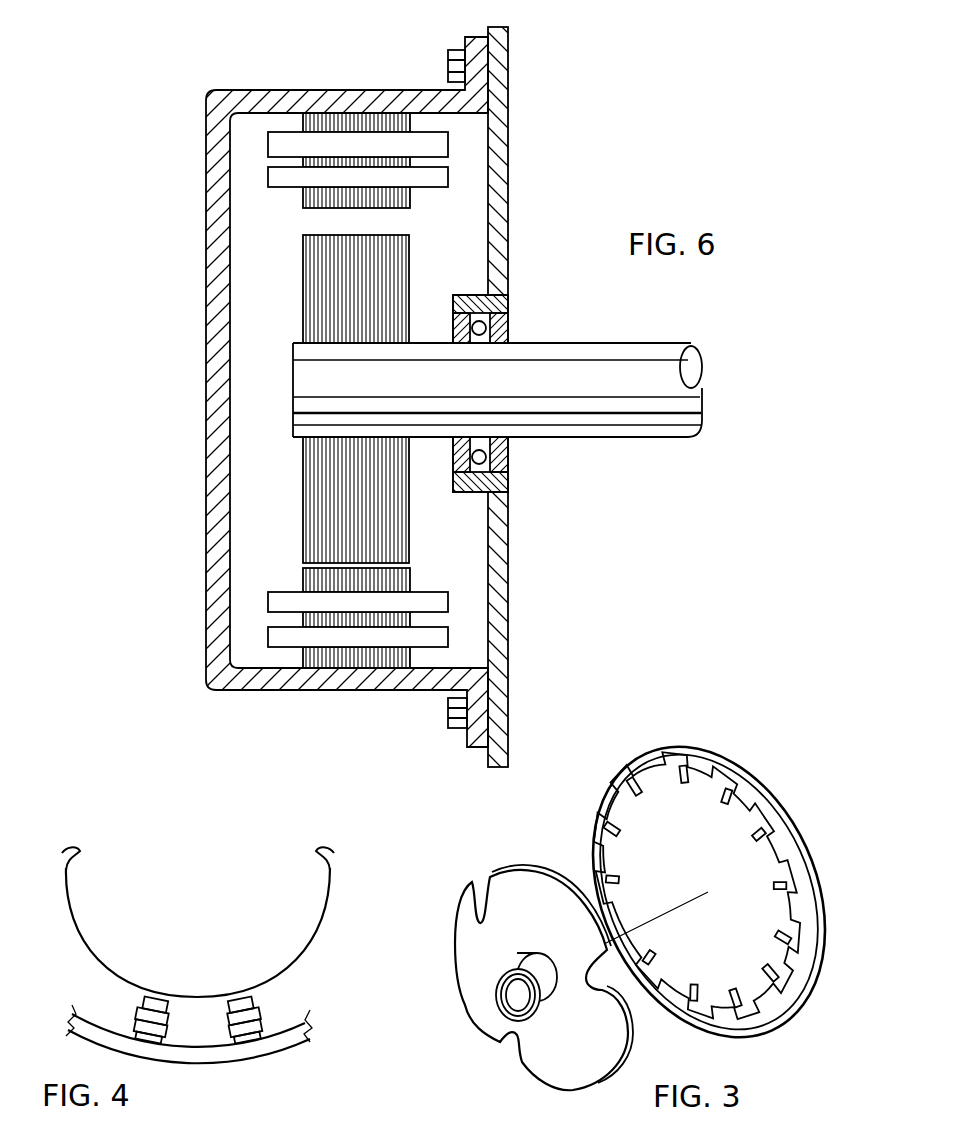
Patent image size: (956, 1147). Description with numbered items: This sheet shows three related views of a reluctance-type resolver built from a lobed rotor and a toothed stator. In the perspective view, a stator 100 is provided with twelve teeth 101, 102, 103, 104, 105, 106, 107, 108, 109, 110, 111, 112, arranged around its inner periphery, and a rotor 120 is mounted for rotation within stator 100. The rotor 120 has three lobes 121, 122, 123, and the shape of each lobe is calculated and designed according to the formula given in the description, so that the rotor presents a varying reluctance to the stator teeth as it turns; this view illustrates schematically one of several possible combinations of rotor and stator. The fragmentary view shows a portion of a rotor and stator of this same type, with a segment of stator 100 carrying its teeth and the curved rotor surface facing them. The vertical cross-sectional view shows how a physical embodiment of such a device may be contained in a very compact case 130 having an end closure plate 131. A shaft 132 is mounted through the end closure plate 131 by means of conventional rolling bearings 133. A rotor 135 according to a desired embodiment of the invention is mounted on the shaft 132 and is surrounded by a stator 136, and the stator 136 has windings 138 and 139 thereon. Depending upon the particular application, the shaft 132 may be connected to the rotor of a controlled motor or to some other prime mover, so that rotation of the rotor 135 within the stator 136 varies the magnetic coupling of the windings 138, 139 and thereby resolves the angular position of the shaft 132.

In FIG. 4, the stator 100 is at (289, 1040).
In FIG. 3, the stator 100 is at (653, 757).
In FIG. 3, the tooth 101 is at (682, 785).
In FIG. 3, the tooth 102 is at (726, 800).
In FIG. 3, the tooth 103 is at (758, 836).
In FIG. 3, the tooth 104 is at (778, 886).
In FIG. 3, the tooth 105 is at (781, 936).
In FIG. 3, the tooth 106 is at (777, 949).
In FIG. 3, the tooth 107 is at (735, 996).
In FIG. 3, the tooth 108 is at (694, 990).
In FIG. 3, the tooth 109 is at (652, 950).
In FIG. 3, the tooth 110 is at (622, 880).
In FIG. 3, the tooth 111 is at (618, 836).
In FIG. 3, the tooth 112 is at (630, 800).
In FIG. 3, the rotor 120 is at (481, 923).
In FIG. 3, the lobe 121 is at (537, 907).
In FIG. 3, the lobe 122 is at (573, 1072).
In FIG. 3, the lobe 123 is at (528, 988).
In FIG. 6, the case 130 is at (243, 99).
In FIG. 6, the end closure plate 131 is at (498, 167).
In FIG. 6, the shaft 132 is at (568, 356).
In FIG. 6, the rolling bearings 133 is at (505, 320).
In FIG. 6, the rotor 135 is at (318, 283).
In FIG. 6, the stator 136 is at (333, 120).
In FIG. 6, the winding 138 is at (278, 145).
In FIG. 6, the winding 139 is at (278, 178).